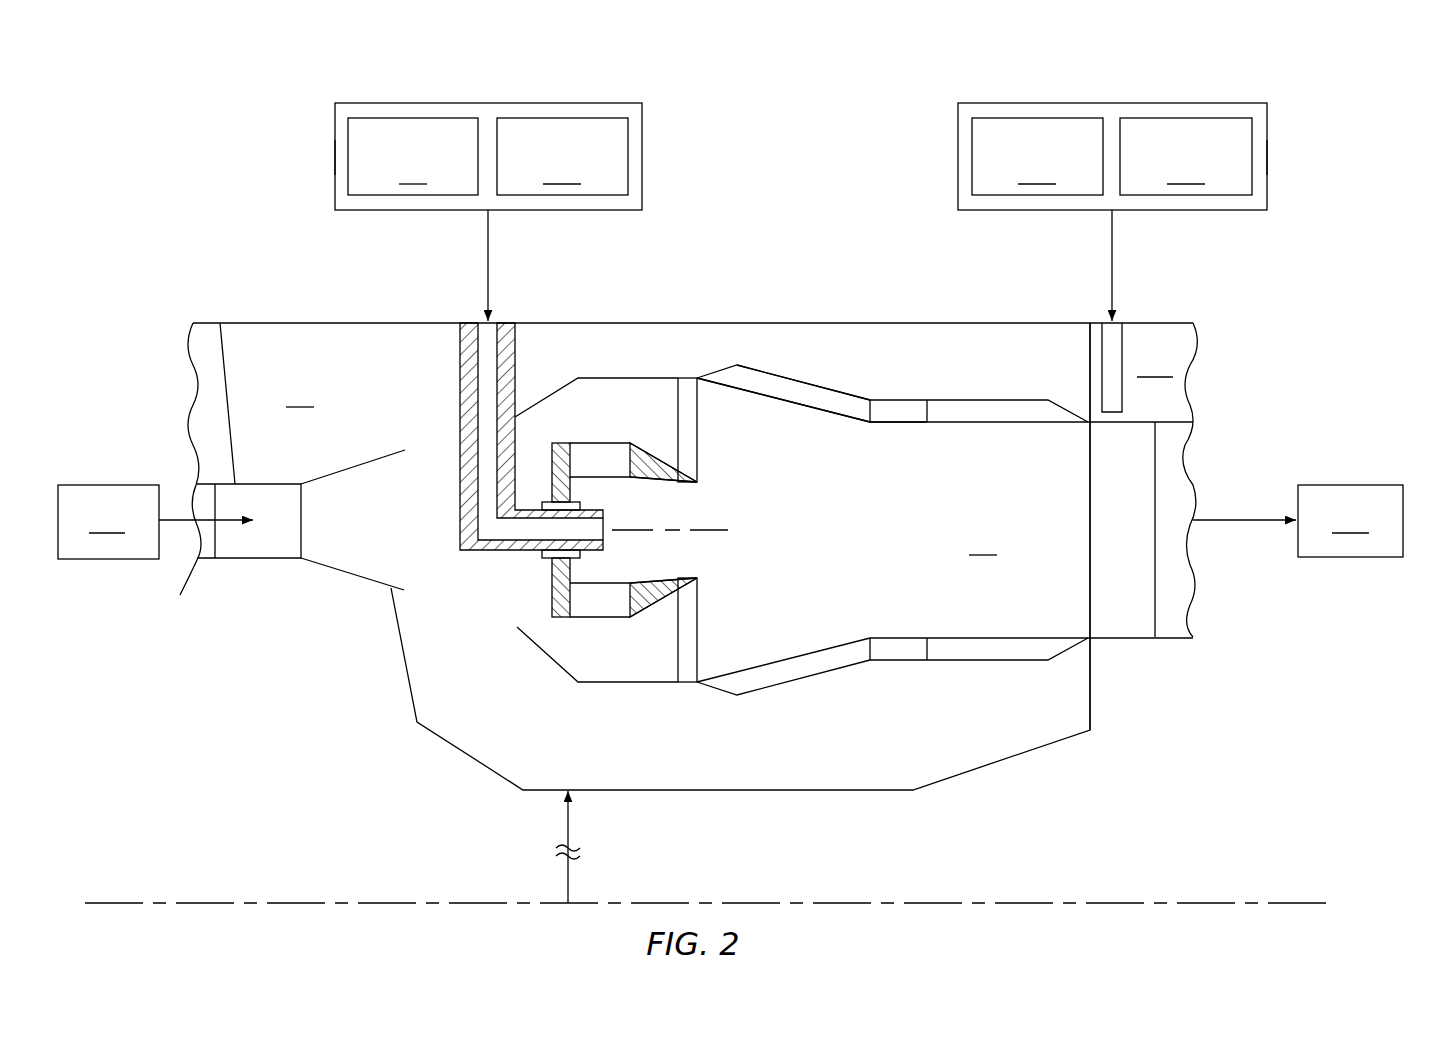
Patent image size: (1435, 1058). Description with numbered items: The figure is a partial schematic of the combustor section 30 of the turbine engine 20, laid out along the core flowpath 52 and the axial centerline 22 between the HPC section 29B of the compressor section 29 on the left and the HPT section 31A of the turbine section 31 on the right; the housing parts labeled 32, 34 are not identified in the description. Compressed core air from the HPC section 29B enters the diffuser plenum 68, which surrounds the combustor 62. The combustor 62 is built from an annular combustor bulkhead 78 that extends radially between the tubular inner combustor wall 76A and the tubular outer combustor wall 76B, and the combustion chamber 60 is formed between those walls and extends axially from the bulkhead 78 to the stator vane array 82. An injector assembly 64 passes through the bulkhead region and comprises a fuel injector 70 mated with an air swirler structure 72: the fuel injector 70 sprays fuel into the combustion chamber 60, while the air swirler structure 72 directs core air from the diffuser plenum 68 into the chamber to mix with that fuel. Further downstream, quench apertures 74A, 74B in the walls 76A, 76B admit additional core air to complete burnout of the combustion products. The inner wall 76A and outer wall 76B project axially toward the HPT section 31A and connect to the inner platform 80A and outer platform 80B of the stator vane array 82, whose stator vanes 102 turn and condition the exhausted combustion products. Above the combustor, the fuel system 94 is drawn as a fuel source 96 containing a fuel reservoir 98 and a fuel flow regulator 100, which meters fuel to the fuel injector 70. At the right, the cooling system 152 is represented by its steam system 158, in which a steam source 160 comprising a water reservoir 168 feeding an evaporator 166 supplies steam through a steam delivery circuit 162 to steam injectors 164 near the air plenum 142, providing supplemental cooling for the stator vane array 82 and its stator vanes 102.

The turbine engine 20 is at (135, 112).
The axial centerline 22 is at (94, 899).
The compressor section 29 is at (158, 358).
The HPC section 29B is at (155, 522).
The combustor section 30 is at (932, 313).
The turbine section 31 is at (1252, 315).
The HPT section 31A is at (1350, 521).
The combustor housing 32 is at (277, 357).
The combustor liner 34 is at (313, 315).
The core flowpath 52 is at (202, 545).
The combustion chamber 60 is at (982, 541).
The combustor 62 is at (960, 390).
The injector assembly 64 is at (470, 571).
The diffuser plenum 68 is at (299, 393).
The fuel injector 70 is at (441, 524).
The air swirler structure 72 is at (667, 450).
The quench aperture 74A is at (902, 643).
The quench aperture 74B is at (902, 410).
The inner combustor wall 76A is at (828, 638).
The outer combustor wall 76B is at (845, 427).
The combustor bulkhead 78 is at (712, 620).
The inner platform 80A is at (1127, 640).
The outer platform 80B is at (1140, 415).
The stator vane array 82 is at (1167, 443).
The fuel system 94 is at (521, 190).
The fuel source 96 is at (335, 157).
The fuel reservoir 98 is at (413, 156).
The fuel flow regulator 100 is at (562, 156).
The stator vanes 102 is at (1157, 493).
The air plenum 142 is at (1133, 526).
The cooling system 152 is at (1194, 131).
The steam system 158 is at (1194, 131).
The steam source 160 is at (1267, 157).
The steam delivery circuit 162 is at (1122, 285).
The steam injector 164 is at (1112, 424).
The evaporator 166 is at (1037, 156).
The water reservoir 168 is at (1186, 156).